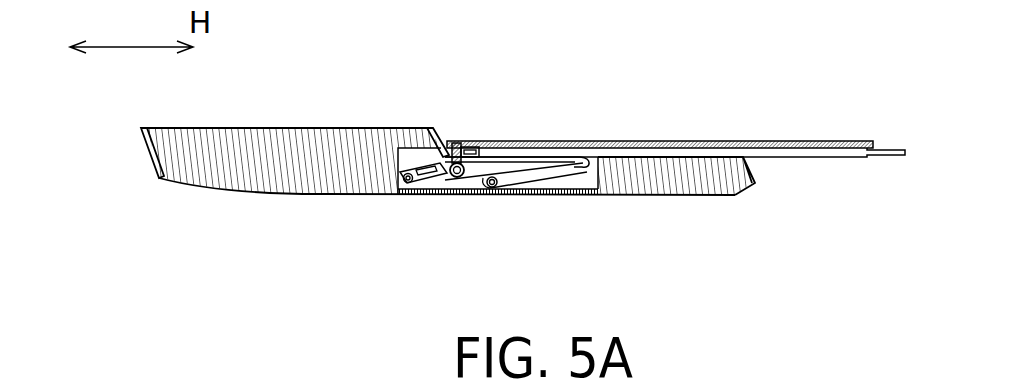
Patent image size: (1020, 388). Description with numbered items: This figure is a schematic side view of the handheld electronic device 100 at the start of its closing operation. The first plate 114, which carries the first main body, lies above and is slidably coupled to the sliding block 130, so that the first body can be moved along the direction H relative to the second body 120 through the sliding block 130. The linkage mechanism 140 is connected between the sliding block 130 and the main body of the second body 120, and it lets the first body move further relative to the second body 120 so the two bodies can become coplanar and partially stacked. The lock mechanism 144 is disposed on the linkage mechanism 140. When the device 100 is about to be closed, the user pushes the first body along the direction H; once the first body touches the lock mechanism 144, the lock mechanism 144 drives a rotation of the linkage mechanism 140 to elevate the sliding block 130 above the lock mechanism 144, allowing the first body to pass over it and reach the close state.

The handheld electronic device 100 is at (845, 283).
The first plate 114 is at (652, 141).
The second body 120 is at (315, 188).
The sliding block 130 is at (568, 168).
The linkage mechanism 140 is at (507, 176).
The lock mechanism 144 is at (457, 143).